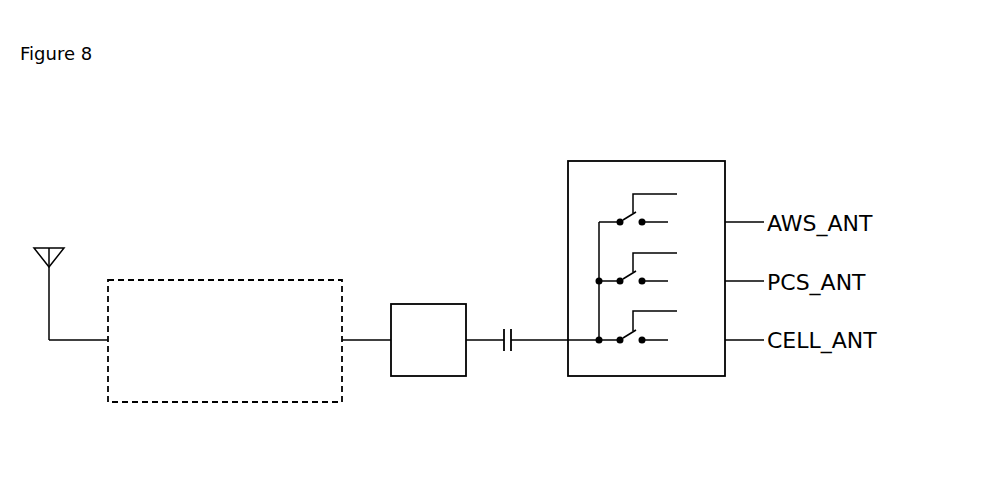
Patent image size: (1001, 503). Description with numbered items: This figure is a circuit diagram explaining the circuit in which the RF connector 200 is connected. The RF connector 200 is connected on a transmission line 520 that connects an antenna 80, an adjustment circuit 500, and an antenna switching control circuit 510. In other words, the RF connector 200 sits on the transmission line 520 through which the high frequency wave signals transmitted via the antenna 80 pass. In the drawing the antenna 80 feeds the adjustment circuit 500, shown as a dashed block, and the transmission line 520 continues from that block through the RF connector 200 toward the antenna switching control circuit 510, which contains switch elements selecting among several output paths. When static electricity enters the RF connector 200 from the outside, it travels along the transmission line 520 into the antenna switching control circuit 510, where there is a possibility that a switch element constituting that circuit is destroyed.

The antenna 80 is at (56, 247).
The adjustment circuit 500 is at (281, 280).
The transmission line 520 is at (366, 343).
The RF connector 200 is at (425, 304).
The antenna switching control circuit 510 is at (672, 161).